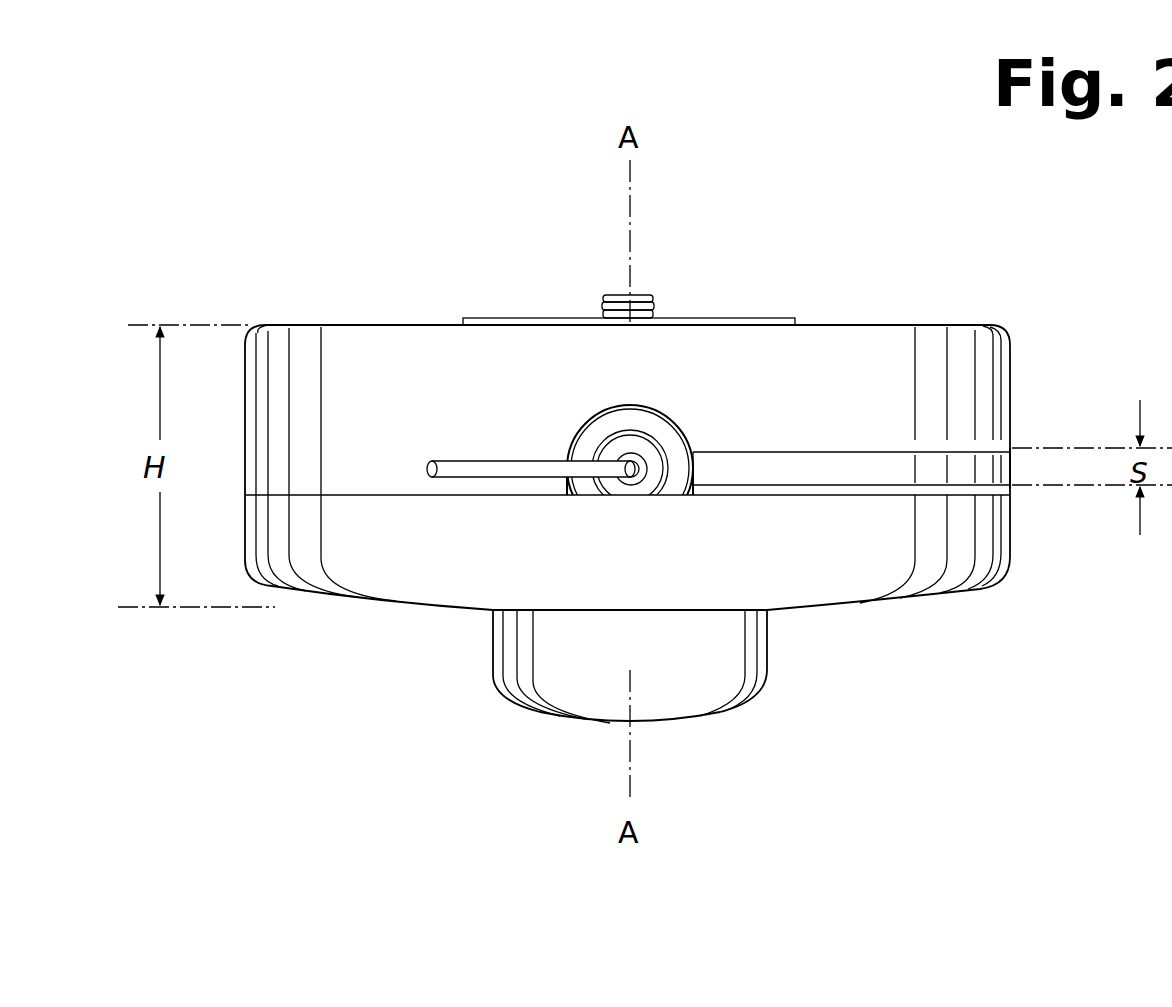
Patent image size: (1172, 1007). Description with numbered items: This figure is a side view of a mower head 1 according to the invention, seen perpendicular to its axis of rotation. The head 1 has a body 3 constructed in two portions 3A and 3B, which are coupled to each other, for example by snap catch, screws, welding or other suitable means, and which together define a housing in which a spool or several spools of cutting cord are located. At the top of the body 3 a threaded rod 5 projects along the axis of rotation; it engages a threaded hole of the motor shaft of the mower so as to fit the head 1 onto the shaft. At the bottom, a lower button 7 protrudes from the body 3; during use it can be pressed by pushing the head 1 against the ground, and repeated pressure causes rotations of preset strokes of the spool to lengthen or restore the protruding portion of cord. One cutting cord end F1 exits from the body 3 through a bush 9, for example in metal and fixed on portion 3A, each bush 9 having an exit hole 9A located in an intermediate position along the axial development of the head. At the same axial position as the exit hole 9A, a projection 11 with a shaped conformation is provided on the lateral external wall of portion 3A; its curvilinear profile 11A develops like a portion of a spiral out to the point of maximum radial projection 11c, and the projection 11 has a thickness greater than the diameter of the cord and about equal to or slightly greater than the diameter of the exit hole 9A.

The mower head 1 is at (963, 278).
The body 3 is at (880, 322).
The upper body portion 3A is at (1001, 373).
The lower body portion 3B is at (1010, 555).
The threaded rod 5 is at (655, 313).
The lower button 7 is at (706, 697).
The bush 9 is at (588, 486).
The exit hole 9A is at (649, 455).
The projection 11 is at (1014, 473).
The curvilinear profile 11A is at (800, 467).
The point of maximum radial projection 11c is at (688, 498).
The cutting cord end F1 is at (455, 467).